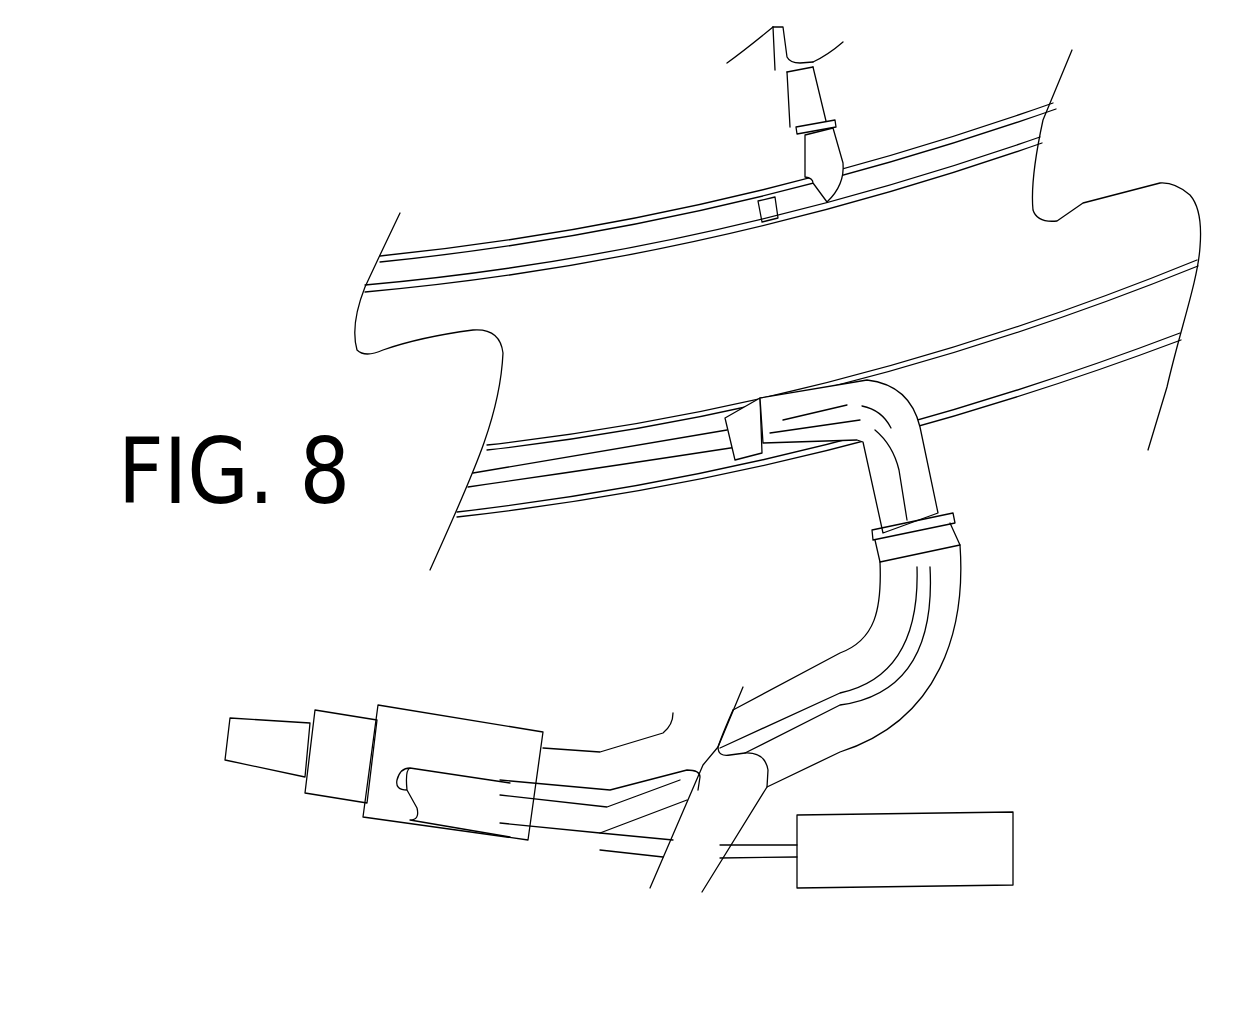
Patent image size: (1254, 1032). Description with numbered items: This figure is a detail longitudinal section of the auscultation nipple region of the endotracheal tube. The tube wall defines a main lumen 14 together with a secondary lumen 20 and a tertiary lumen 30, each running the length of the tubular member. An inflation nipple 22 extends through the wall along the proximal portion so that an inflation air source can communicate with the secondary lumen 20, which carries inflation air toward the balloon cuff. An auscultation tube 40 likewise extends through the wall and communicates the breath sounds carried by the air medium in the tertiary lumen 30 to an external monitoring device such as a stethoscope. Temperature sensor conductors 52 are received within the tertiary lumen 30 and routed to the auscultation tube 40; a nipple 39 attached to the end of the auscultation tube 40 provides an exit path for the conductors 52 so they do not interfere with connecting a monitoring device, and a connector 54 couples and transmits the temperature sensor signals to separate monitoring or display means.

The main lumen 14 is at (700, 339).
The secondary lumen 20 is at (468, 260).
The inflation nipple 22 is at (820, 100).
The tertiary lumen 30 is at (528, 490).
The nipple 39 is at (320, 768).
The auscultation tube 40 is at (950, 683).
The temperature sensor conductors 52 is at (637, 455).
The connector 54 is at (887, 868).